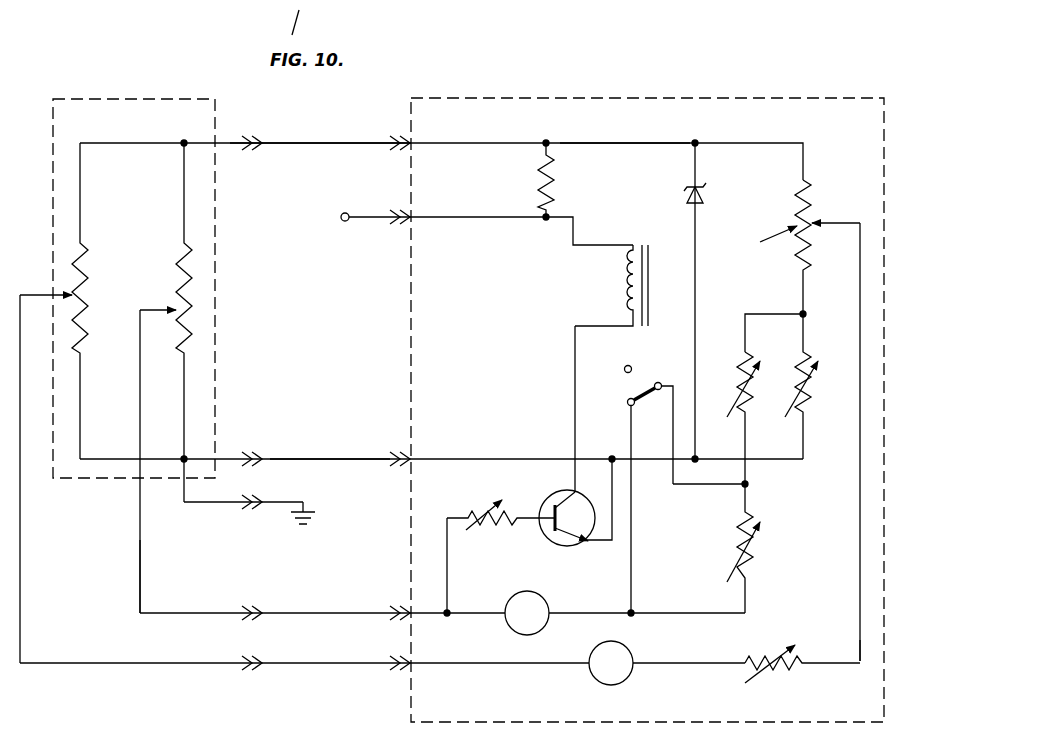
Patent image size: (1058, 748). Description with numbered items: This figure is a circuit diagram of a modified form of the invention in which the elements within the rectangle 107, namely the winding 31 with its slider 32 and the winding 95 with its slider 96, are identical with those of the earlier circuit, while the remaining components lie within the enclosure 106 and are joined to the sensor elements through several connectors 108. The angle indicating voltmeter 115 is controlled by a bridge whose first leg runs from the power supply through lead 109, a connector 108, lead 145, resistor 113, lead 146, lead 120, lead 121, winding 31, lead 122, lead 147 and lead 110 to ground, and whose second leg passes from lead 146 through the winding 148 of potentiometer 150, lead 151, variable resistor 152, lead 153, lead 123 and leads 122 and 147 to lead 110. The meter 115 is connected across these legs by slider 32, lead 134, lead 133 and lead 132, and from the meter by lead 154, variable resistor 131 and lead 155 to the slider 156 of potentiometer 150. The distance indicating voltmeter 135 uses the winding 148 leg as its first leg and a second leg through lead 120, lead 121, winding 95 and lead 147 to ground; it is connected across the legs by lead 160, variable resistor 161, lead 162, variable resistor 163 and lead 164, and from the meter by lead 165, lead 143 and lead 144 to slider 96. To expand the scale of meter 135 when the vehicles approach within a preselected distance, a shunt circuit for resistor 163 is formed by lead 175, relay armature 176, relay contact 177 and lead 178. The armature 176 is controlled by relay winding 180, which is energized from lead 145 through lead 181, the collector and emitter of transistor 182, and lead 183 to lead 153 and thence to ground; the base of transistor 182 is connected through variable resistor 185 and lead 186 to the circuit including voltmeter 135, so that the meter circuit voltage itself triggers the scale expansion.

The control circuit housing (dashed enclosure) 106 is at (700, 98).
The rectangle 107 is at (120, 99).
The connector 108 is at (245, 139).
The lead 109 is at (341, 220).
The lead 110 is at (312, 511).
The resistor 113 is at (558, 185).
The angle indicating voltmeter 115 is at (626, 681).
The lead 120 is at (335, 143).
The lead 121 is at (155, 143).
The lead 122 is at (124, 458).
The lead 123 is at (330, 460).
The variable resistor 131 is at (784, 669).
The lead 132 is at (506, 666).
The lead 133 is at (315, 663).
The lead 134 is at (114, 663).
The distance indicating voltmeter 135 is at (549, 601).
The lead 143 is at (339, 613).
The lead 144 is at (140, 568).
The lead 145 is at (462, 218).
The lead 146 is at (625, 143).
The lead 147 is at (189, 504).
The winding 148 is at (812, 194).
The potentiometer 150 is at (762, 241).
The lead 151 is at (805, 312).
The variable resistor 152 is at (805, 418).
The lead 153 is at (526, 459).
The lead 154 is at (698, 667).
The lead 155 is at (860, 615).
The slider 156 is at (838, 224).
The lead 160 is at (774, 314).
The variable resistor 161 is at (747, 418).
The lead 162 is at (749, 485).
The variable resistor 163 is at (754, 546).
The lead 164 is at (676, 615).
The lead 165 is at (490, 617).
The lead 175 is at (688, 486).
The relay armature 176 is at (626, 394).
The relay contact 177 is at (626, 411).
The lead 178 is at (632, 524).
The relay winding 180 is at (622, 300).
The lead 181 is at (575, 370).
The transistor 182 is at (567, 494).
The lead 183 is at (584, 541).
The variable resistor 185 is at (492, 531).
The lead 186 is at (448, 588).
The winding 31 is at (87, 322).
The slider 32 is at (40, 294).
The winding 95 is at (194, 295).
The slider 96 is at (166, 308).